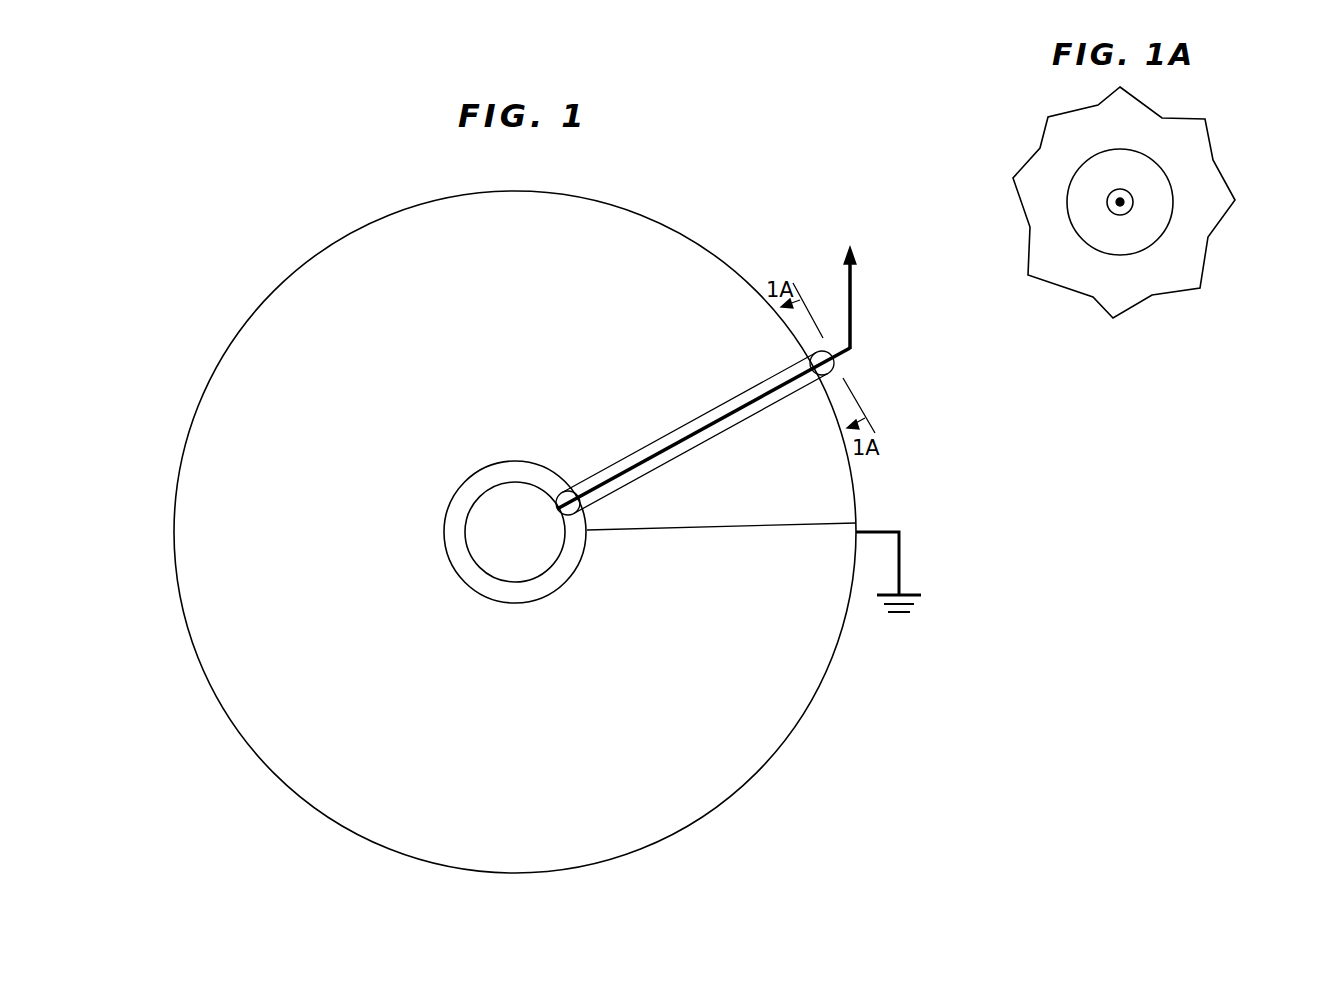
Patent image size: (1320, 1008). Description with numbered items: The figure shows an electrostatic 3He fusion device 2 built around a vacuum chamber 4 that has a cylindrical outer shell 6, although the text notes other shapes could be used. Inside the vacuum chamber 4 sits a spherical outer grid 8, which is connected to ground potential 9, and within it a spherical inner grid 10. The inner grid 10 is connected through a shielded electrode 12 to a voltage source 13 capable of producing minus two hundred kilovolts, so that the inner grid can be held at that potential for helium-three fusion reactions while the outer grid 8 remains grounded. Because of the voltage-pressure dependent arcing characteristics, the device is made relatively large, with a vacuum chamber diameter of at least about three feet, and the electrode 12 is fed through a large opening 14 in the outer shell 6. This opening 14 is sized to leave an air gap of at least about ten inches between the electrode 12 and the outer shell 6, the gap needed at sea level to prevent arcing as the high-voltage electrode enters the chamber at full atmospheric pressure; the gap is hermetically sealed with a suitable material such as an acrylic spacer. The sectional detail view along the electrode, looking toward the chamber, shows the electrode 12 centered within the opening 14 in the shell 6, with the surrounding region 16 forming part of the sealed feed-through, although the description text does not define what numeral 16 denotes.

In FIG. 1, the 3He fusion device 2 is at (360, 187).
In FIG. 1, the vacuum chamber 4 is at (516, 334).
In FIG. 1, the cylindrical outer shell 6 is at (302, 270).
In FIG. 1A, the cylindrical outer shell 6 is at (1112, 278).
In FIG. 1, the spherical outer grid 8 is at (522, 603).
In FIG. 1, the spherical inner grid 10 is at (465, 510).
In FIG. 1, the shielded electrode 12 is at (697, 419).
In FIG. 1A, the shielded electrode 12 is at (1128, 188).
In FIG. 1, the voltage source 13 is at (858, 252).
In FIG. 1, the ground potential 9 is at (920, 602).
In FIG. 1A, the opening in the vacuum chamber outer shell 14 is at (1153, 247).
In FIG. 1A, the channel 16 is at (1157, 210).